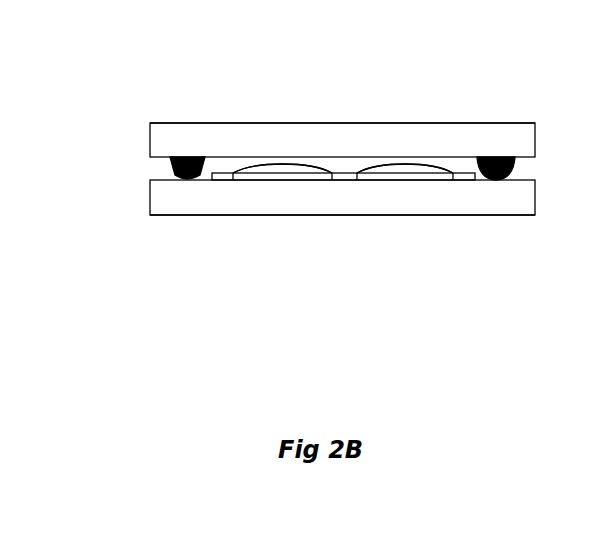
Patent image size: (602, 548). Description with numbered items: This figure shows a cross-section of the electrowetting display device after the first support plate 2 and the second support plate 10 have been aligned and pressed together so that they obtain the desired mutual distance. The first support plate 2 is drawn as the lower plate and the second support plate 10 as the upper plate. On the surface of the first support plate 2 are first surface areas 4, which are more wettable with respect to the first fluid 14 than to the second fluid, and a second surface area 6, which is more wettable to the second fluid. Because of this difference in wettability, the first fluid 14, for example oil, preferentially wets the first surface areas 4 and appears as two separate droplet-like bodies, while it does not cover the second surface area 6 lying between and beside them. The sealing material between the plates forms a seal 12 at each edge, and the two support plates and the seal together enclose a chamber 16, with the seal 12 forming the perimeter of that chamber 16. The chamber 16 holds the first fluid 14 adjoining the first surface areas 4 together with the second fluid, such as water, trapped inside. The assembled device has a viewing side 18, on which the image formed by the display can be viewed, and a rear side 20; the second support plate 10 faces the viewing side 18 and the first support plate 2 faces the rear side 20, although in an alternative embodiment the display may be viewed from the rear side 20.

The first support plate 2 is at (150, 198).
The first surface areas 4 is at (282, 177).
The second surface area 6 is at (222, 182).
The second support plate 10 is at (150, 140).
The seal 12 is at (185, 157).
The first fluid 14 is at (283, 166).
The chamber 16 is at (343, 160).
The viewing side 18 is at (535, 123).
The rear side 20 is at (535, 215).